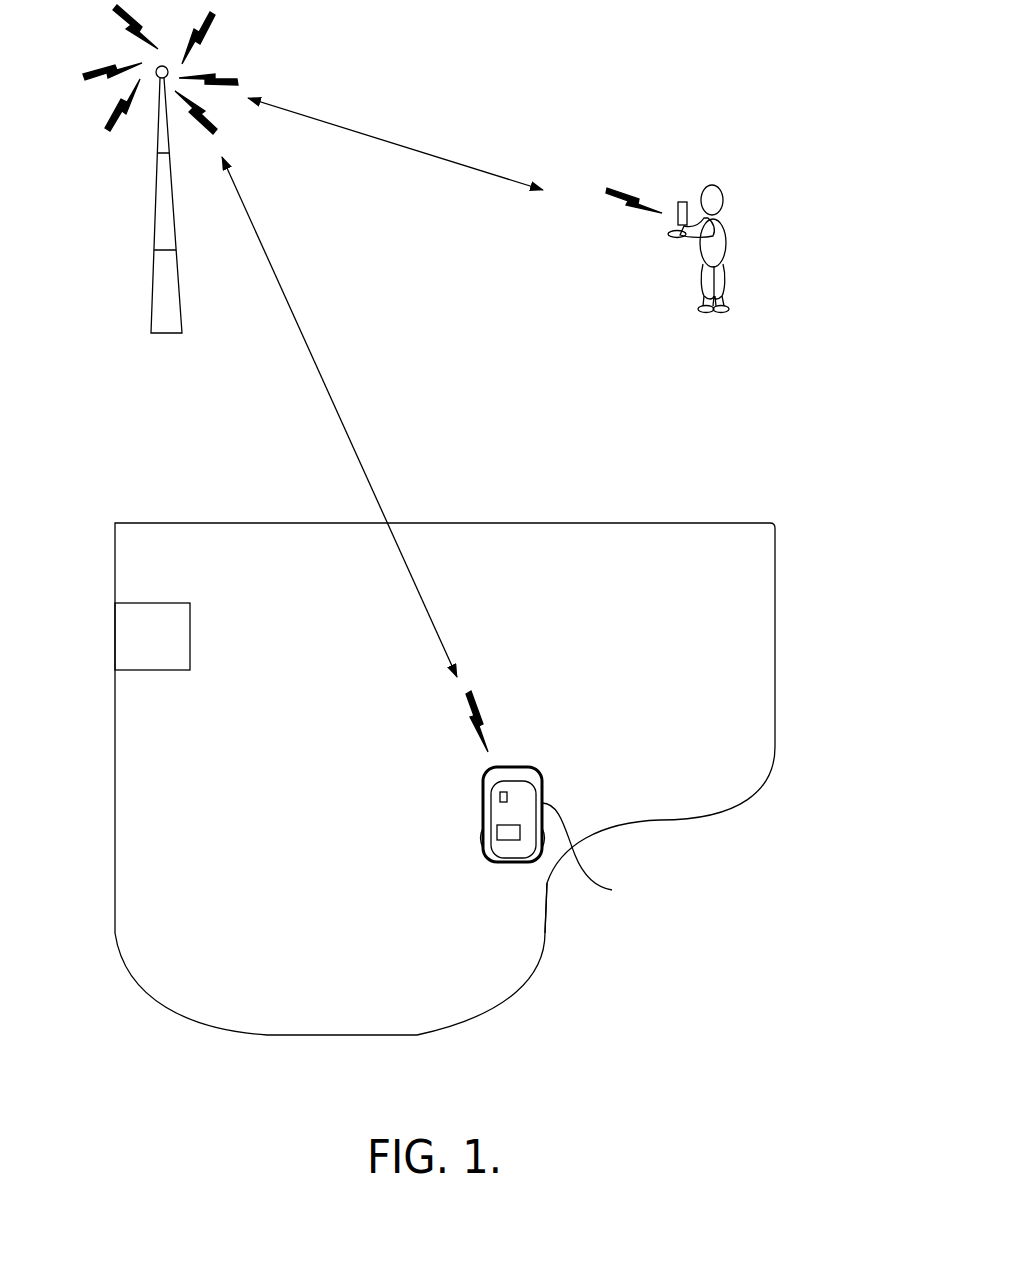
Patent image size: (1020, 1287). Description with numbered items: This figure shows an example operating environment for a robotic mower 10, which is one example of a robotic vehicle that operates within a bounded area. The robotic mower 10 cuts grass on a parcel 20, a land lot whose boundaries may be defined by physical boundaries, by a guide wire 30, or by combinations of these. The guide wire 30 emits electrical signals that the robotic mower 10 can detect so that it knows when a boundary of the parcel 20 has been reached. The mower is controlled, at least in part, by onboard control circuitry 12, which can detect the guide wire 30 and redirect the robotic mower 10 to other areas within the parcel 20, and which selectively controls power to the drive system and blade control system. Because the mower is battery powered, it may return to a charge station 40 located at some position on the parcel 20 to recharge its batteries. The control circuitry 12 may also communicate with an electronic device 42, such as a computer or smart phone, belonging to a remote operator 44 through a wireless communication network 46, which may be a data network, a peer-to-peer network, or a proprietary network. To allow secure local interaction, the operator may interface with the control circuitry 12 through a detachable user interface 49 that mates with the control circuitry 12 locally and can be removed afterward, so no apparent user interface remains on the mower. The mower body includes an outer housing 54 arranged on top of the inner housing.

The robotic mower 10 is at (451, 772).
The control circuitry 12 is at (497, 789).
The parcel 20 is at (326, 852).
The guide wire 30 is at (543, 947).
The charge station 40 is at (138, 635).
The electronic device 42 is at (683, 190).
The remote operator 44 is at (748, 188).
The wireless communication network 46 is at (292, 283).
The detachable user interface 49 is at (513, 822).
The outer housing 54 is at (509, 763).